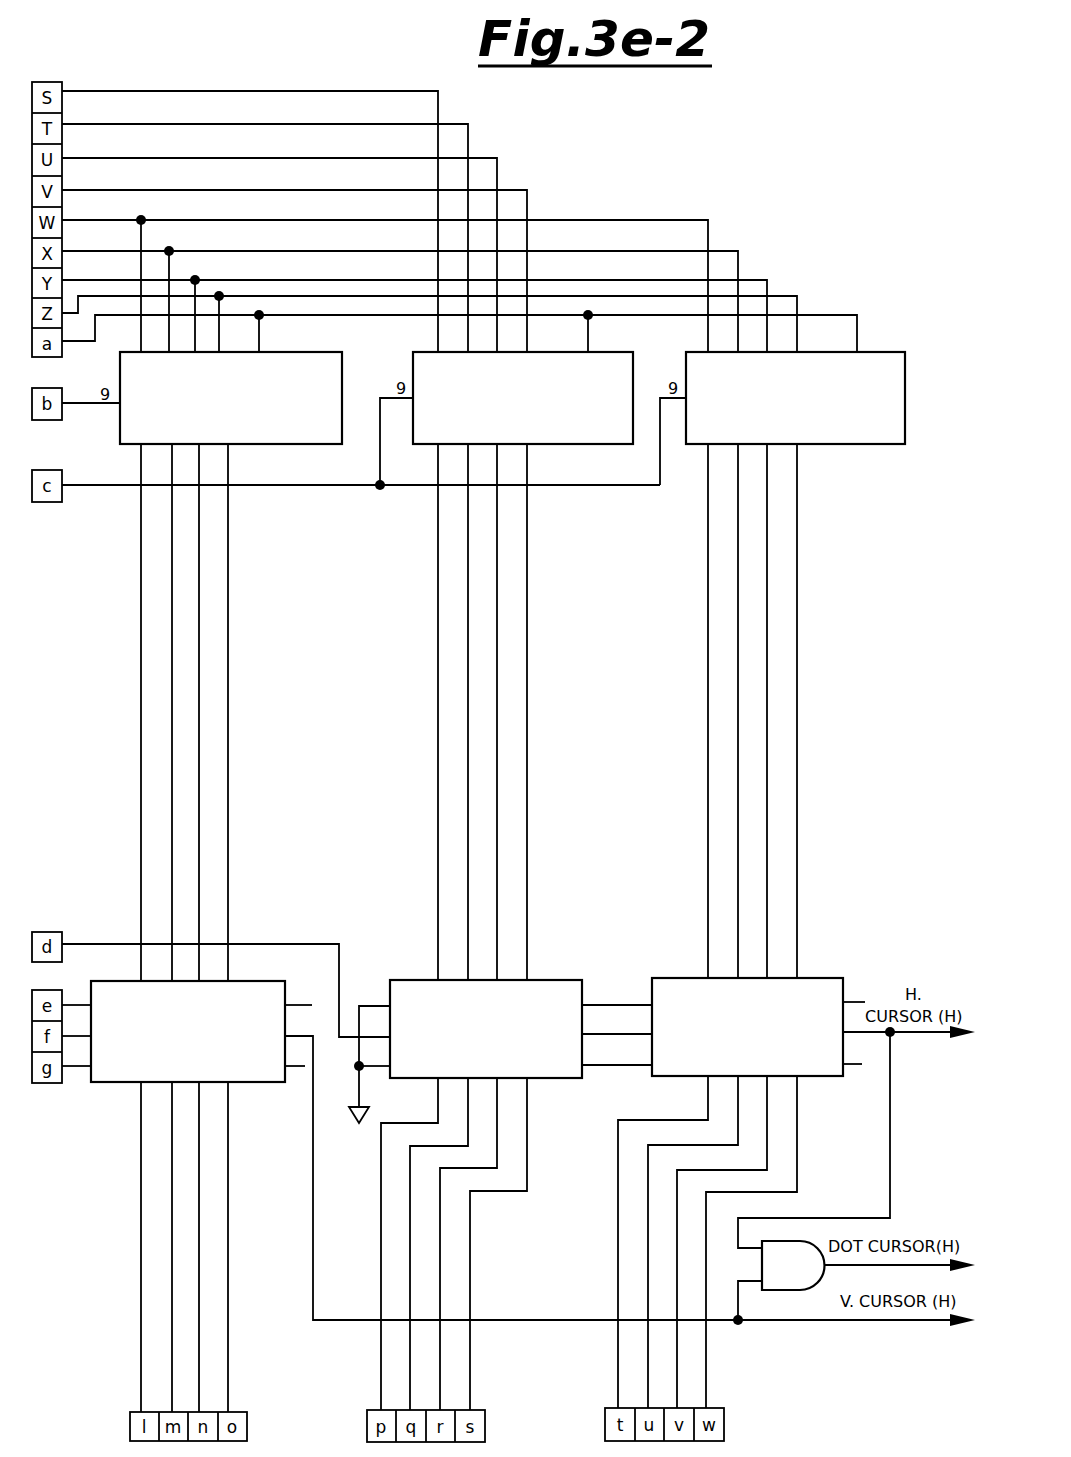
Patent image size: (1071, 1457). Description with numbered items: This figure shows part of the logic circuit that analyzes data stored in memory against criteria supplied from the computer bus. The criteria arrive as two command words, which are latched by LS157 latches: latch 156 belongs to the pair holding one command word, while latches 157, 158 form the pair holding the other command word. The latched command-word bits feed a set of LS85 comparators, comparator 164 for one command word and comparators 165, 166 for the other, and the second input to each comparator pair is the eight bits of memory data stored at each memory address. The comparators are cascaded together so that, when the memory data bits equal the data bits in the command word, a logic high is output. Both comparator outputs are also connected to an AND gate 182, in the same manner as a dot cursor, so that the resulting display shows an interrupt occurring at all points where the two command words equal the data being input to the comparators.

The LS157 latch 156 is at (340, 353).
The LS157 latch 157 is at (620, 352).
The LS157 latch 158 is at (898, 352).
The LS85 comparator 164 is at (275, 982).
The LS85 comparator 165 is at (562, 980).
The LS85 comparator 166 is at (830, 978).
The AND gate 182 is at (820, 1276).